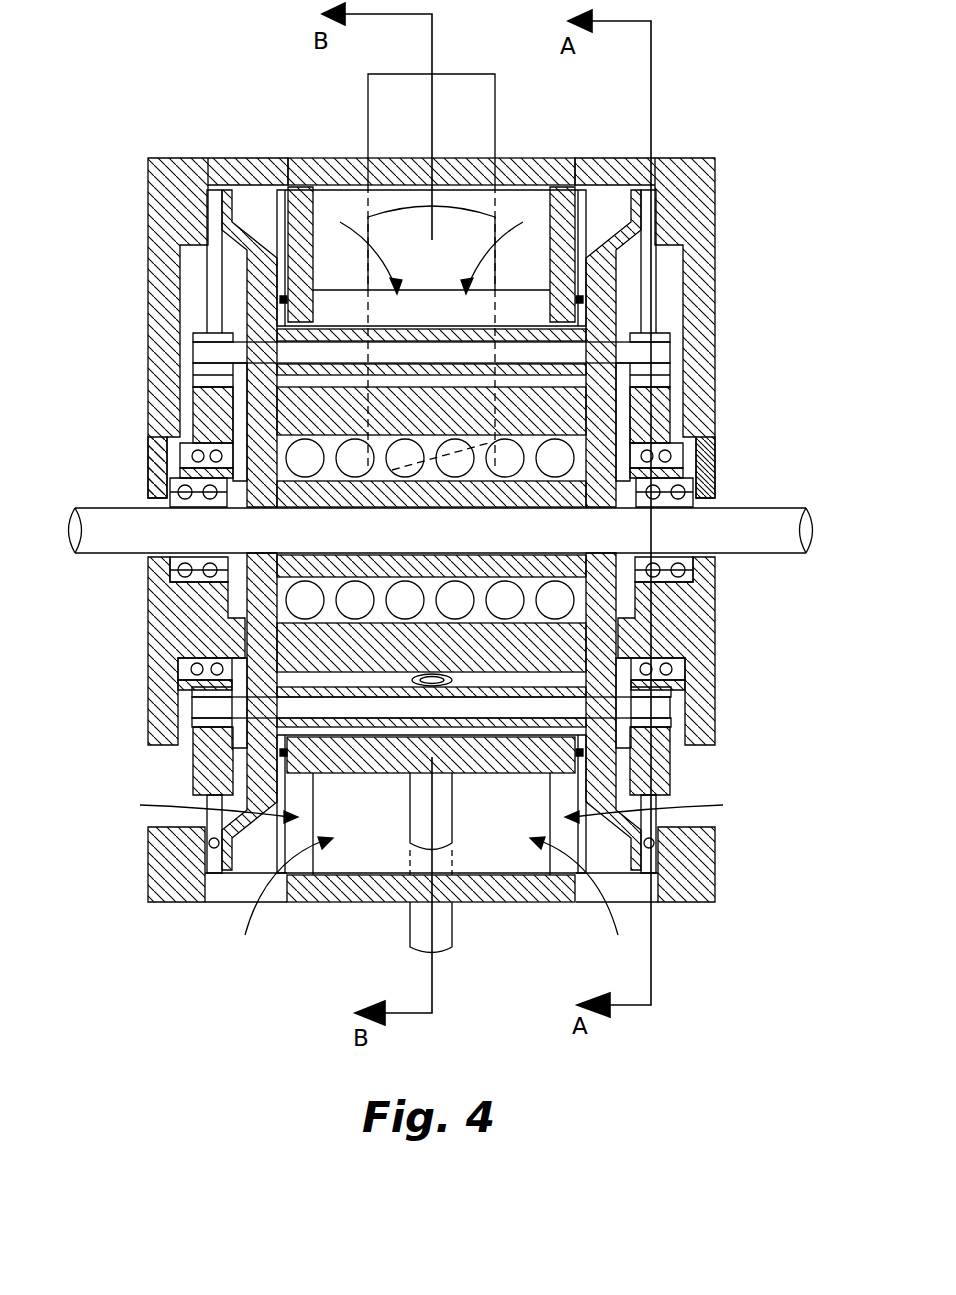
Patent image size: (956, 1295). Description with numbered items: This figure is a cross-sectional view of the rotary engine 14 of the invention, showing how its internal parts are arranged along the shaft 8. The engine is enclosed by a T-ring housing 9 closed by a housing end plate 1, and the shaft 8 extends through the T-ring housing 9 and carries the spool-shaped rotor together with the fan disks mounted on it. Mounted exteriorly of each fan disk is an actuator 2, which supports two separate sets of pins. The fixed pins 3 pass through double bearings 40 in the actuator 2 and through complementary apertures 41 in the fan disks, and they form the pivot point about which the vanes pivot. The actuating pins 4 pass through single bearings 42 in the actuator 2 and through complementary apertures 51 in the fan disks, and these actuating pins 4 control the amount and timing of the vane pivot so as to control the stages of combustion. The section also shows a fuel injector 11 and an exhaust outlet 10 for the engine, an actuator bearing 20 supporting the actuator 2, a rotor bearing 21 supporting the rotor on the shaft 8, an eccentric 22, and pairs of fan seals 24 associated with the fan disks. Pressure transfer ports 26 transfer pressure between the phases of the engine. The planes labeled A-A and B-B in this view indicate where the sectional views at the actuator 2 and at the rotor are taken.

The housing end plate 1 is at (715, 192).
The actuator 2 is at (662, 405).
The fixed pin 3 is at (663, 352).
The actuating pin 4 is at (660, 706).
The shaft 8 is at (785, 529).
The T-ring housing 9 is at (530, 158).
The exhaust outlet 10 is at (404, 125).
The fuel injector 11 is at (443, 922).
The rotary engine 14 is at (92, 767).
The actuator bearing 20 is at (702, 442).
The rotor bearing 21 is at (715, 478).
The eccentric 22 is at (680, 631).
The fan seal 24 is at (654, 845).
The pressure transfer port 26 is at (297, 602).
The double bearing 40 is at (662, 378).
The aperture 41 is at (600, 376).
The single bearing 42 is at (672, 733).
The aperture 51 is at (600, 690).